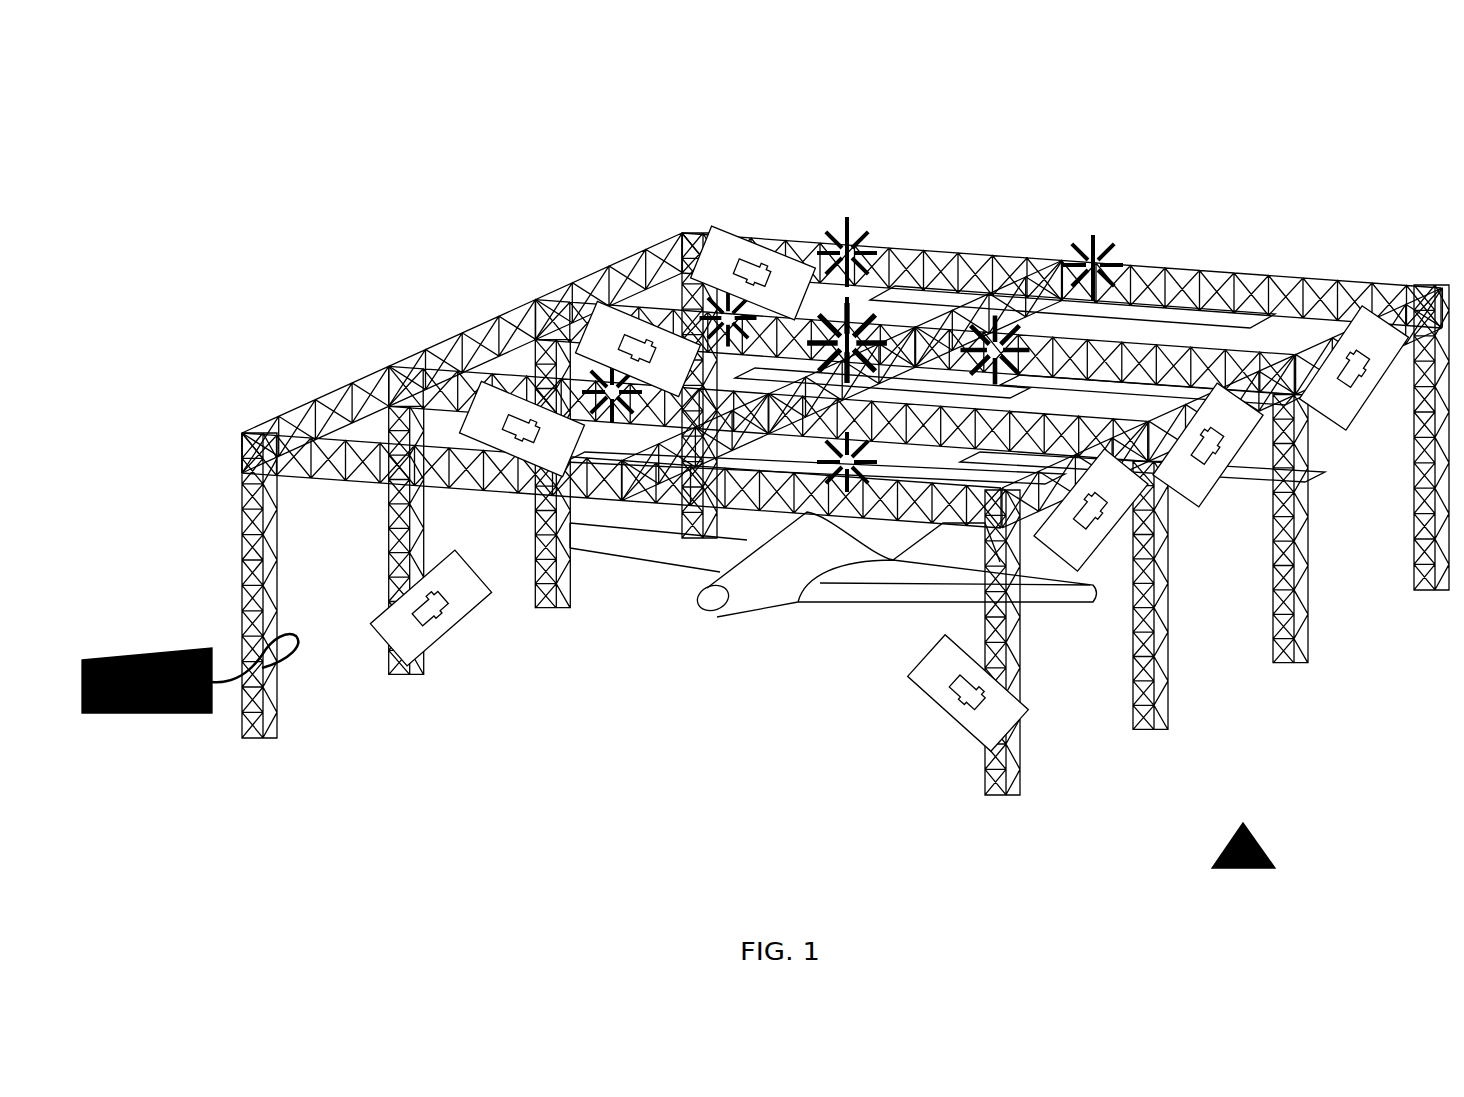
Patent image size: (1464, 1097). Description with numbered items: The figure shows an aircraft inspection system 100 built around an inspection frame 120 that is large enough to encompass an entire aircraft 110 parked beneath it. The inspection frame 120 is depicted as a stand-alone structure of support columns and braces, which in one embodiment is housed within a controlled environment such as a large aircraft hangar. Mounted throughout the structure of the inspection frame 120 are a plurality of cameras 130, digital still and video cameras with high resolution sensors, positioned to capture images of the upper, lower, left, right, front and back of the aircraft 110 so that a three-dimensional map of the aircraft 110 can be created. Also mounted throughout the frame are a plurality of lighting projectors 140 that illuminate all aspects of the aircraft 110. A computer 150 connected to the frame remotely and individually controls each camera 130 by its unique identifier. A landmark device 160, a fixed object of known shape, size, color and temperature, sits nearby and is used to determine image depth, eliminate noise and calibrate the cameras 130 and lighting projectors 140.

The aircraft inspection system 100 is at (418, 100).
The aircraft 110 is at (707, 600).
The inspection frame 120 is at (1310, 637).
The cameras 130 is at (1355, 310).
The lighting projectors 140 is at (847, 220).
The computer 150 is at (143, 653).
The landmark device 160 is at (1262, 843).